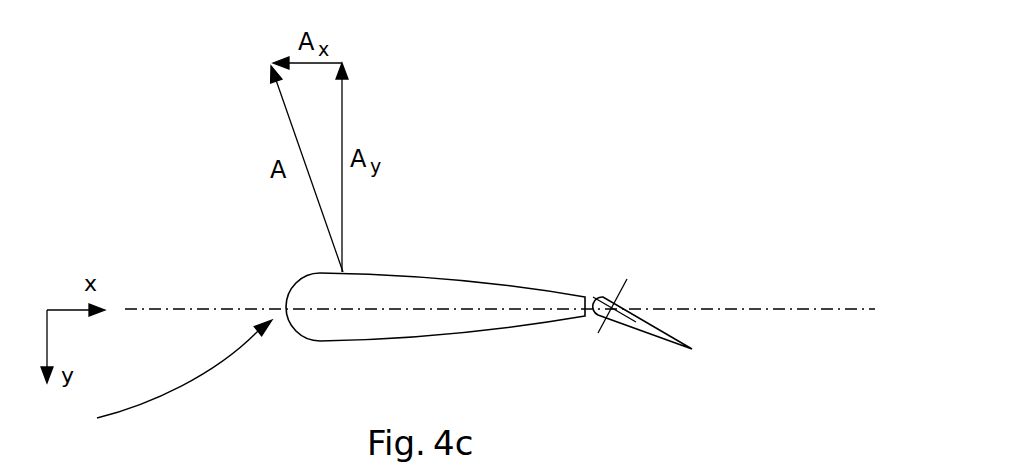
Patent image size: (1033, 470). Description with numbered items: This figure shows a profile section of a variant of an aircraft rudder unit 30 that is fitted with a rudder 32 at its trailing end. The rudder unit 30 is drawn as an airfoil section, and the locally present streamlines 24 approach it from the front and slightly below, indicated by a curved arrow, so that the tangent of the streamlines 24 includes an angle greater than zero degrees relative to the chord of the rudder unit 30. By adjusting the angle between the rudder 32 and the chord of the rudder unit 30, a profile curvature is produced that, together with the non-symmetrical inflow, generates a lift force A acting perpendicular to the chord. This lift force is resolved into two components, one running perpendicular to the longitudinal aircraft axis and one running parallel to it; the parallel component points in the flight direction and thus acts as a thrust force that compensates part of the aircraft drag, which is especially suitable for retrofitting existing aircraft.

The streamlines 24 is at (187, 382).
The rudder unit 30 is at (438, 295).
The rudder 32 is at (637, 308).